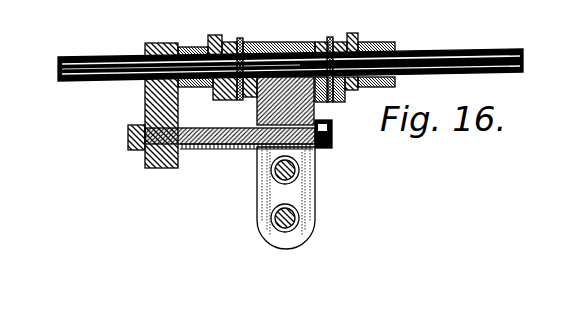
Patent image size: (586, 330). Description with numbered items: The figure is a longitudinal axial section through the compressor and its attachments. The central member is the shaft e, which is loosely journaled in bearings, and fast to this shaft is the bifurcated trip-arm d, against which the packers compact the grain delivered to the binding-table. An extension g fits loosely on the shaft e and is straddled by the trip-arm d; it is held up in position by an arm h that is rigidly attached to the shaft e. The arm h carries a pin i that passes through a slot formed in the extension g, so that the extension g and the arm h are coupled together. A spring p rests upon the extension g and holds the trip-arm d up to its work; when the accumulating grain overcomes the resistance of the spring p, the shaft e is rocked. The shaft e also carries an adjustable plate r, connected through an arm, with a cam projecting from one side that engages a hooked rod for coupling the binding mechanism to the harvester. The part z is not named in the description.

The shaft e is at (290, 54).
The trip-arm d is at (246, 40).
The arm h is at (153, 105).
The bolt z is at (200, 146).
The pin i is at (332, 142).
The extension g is at (293, 198).
The spring p is at (299, 166).
The adjustable plate r is at (299, 218).